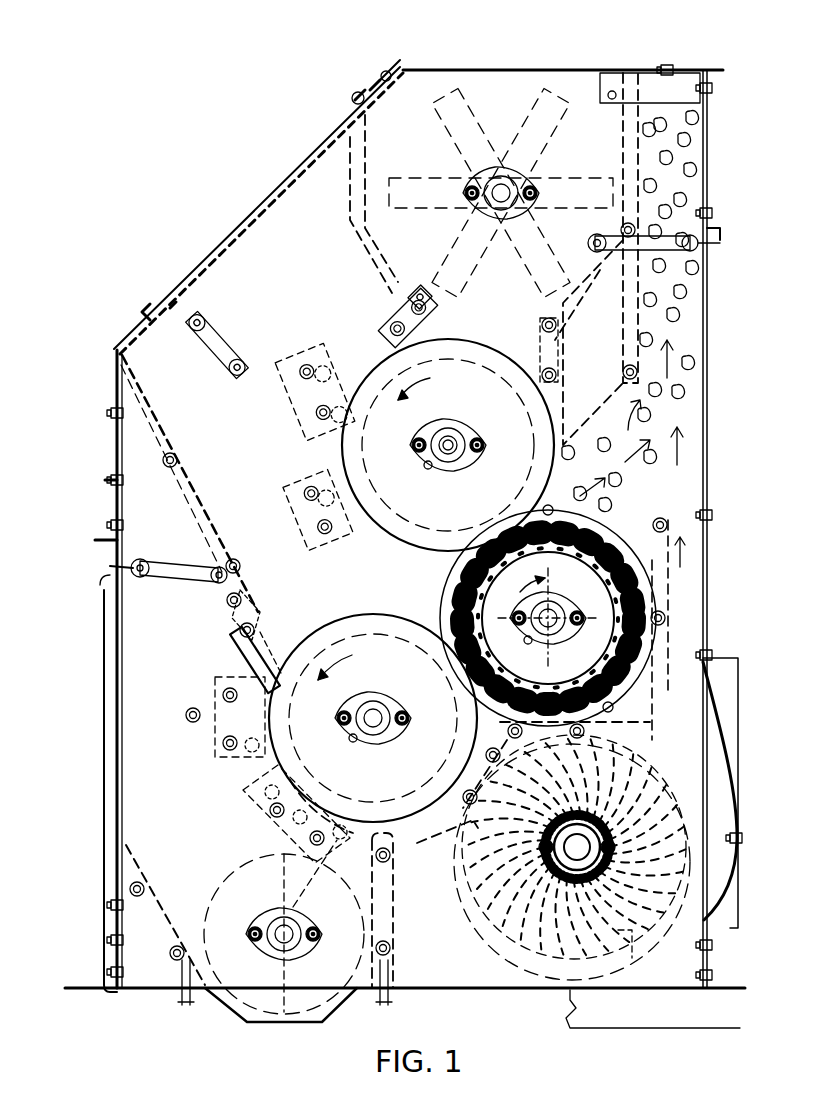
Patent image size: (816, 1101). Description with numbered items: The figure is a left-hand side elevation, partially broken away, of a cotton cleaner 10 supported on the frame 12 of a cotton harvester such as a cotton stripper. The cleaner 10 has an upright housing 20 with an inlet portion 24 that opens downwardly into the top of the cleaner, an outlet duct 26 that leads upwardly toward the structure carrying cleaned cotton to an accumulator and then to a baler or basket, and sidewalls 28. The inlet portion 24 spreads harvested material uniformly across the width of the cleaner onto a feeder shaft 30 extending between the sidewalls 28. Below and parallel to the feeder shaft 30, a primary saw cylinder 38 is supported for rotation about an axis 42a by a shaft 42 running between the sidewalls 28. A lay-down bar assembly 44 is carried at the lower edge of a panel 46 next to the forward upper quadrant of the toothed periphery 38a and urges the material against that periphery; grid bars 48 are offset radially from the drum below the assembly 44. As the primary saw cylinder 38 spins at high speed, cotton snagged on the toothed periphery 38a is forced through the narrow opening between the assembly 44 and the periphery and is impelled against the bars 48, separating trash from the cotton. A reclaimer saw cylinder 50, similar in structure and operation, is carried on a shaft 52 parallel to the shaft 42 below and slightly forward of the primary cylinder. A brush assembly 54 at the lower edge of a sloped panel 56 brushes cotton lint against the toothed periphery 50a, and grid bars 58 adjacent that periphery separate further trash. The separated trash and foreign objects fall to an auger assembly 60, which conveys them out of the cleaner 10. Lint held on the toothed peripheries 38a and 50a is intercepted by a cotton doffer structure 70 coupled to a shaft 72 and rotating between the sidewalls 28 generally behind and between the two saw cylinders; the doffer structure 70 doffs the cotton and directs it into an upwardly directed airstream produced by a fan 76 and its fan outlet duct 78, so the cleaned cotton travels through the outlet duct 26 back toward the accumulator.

The cotton cleaner 10 is at (748, 88).
The frame 12 is at (600, 1028).
The upright housing 20 is at (92, 580).
The inlet portion 24 is at (452, 58).
The outlet duct 26 is at (650, 65).
The sidewalls 28 is at (135, 432).
The feeder shaft 30 is at (557, 90).
The primary saw cylinder 38 is at (368, 445).
The toothed periphery 38a is at (378, 362).
The shaft 42 is at (452, 440).
The axis 42a is at (450, 455).
The lay-down bar assembly 44 is at (392, 299).
The panel 46 is at (362, 233).
The grid bars 48 is at (290, 378).
The reclaimer saw cylinder 50 is at (300, 762).
The toothed periphery 50a is at (330, 640).
The shaft 52 is at (378, 708).
The brush assembly 54 is at (275, 642).
The sloped panel 56 is at (192, 478).
The grid bars 58 is at (316, 838).
The auger assembly 60 is at (237, 1012).
The cotton doffer structure 70 is at (600, 530).
The shaft 72 is at (615, 624).
The fan 76 is at (677, 960).
The fan outlet duct 78 is at (683, 645).